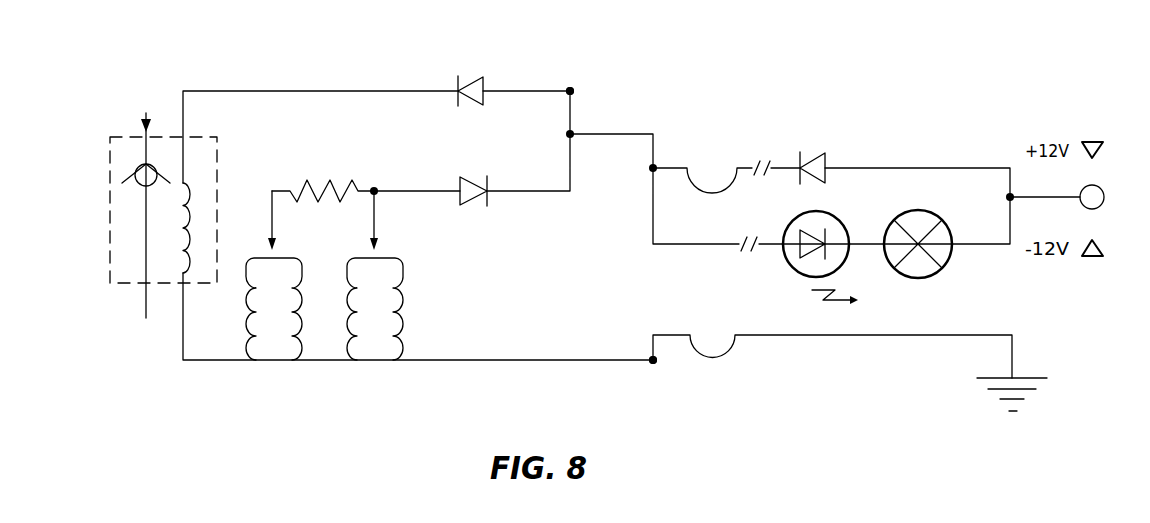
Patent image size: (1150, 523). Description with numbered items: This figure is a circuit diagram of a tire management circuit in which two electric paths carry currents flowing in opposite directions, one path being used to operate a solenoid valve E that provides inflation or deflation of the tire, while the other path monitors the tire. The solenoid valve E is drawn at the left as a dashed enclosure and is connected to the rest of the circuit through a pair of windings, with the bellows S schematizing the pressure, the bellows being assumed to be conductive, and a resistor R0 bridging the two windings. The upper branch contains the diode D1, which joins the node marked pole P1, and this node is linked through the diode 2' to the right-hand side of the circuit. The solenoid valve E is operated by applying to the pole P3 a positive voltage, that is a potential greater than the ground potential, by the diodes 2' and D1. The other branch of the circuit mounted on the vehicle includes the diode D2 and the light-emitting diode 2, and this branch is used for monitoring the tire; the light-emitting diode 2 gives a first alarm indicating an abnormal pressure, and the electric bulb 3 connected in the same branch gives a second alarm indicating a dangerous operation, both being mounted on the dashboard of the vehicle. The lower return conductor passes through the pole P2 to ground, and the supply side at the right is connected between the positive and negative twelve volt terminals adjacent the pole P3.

The solenoid valve E is at (119, 129).
The resistor R0 is at (322, 181).
The diode D1 is at (488, 74).
The diode D2 is at (489, 179).
The terminal P1 is at (573, 88).
The terminal P2 is at (654, 362).
The pole P3 is at (1106, 186).
The bellows S is at (349, 311).
The diode 2' is at (814, 145).
The light-emitting diode 2 is at (804, 242).
The electric bulb 3 is at (943, 257).